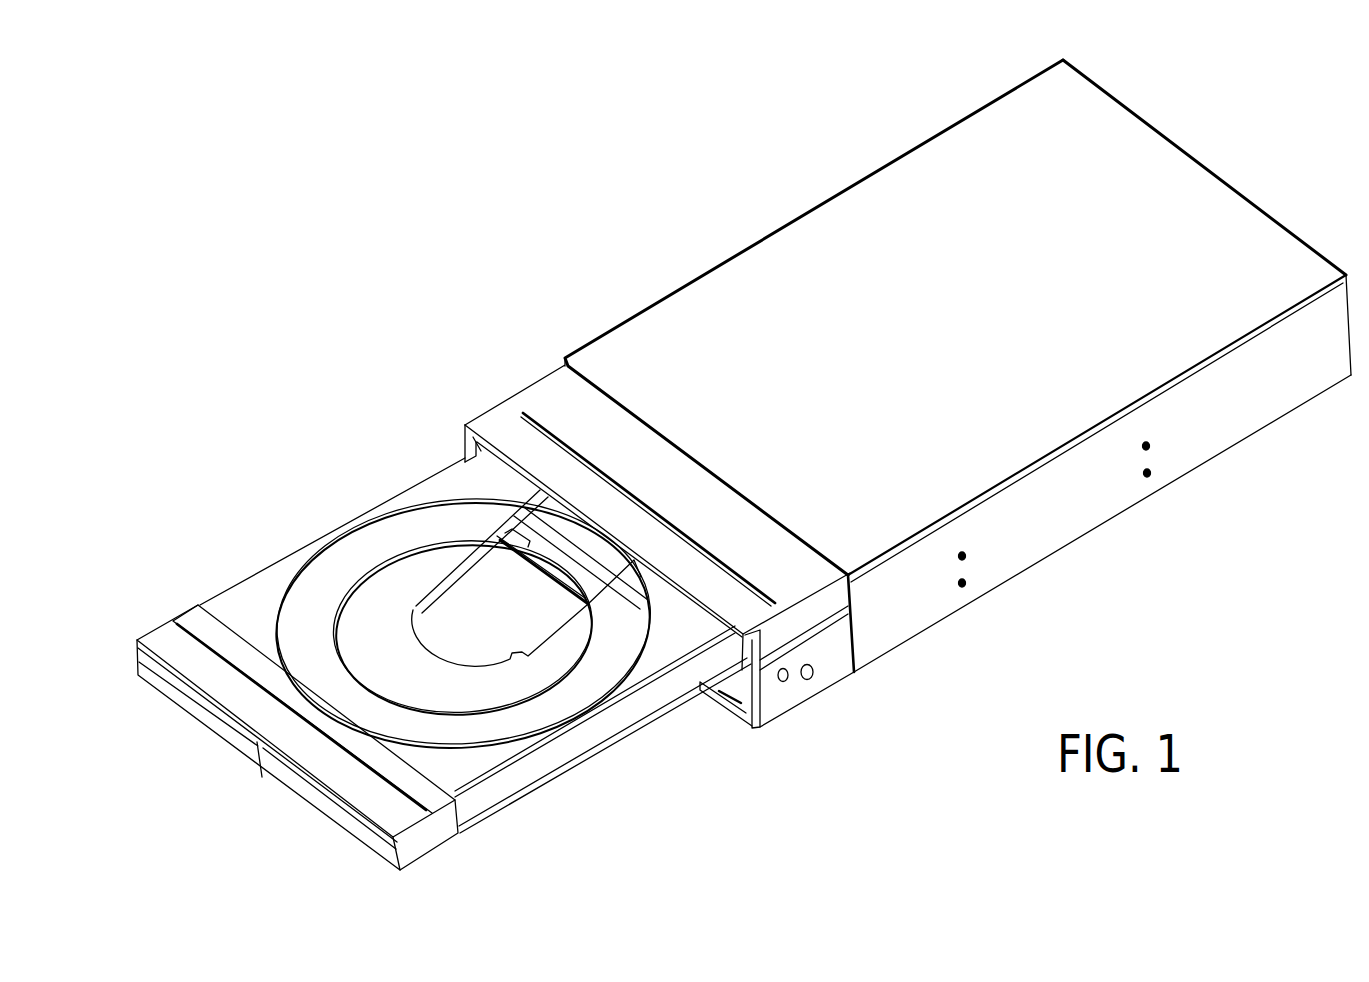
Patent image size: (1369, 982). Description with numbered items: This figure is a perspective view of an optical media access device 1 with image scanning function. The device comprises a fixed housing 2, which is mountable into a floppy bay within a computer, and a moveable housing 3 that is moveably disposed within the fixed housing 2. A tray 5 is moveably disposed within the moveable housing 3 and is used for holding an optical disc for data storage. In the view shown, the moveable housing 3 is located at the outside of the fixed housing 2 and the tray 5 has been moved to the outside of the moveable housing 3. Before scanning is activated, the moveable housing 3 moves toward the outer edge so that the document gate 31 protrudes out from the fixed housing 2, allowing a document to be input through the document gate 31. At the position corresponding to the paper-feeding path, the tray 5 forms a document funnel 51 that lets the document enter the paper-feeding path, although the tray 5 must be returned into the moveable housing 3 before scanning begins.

The optical media access device 1 is at (744, 465).
The fixed housing 2 is at (723, 348).
The moveable housing 3 is at (635, 566).
The document gate 31 is at (525, 415).
The tray 5 is at (444, 632).
The document funnel 51 is at (198, 633).